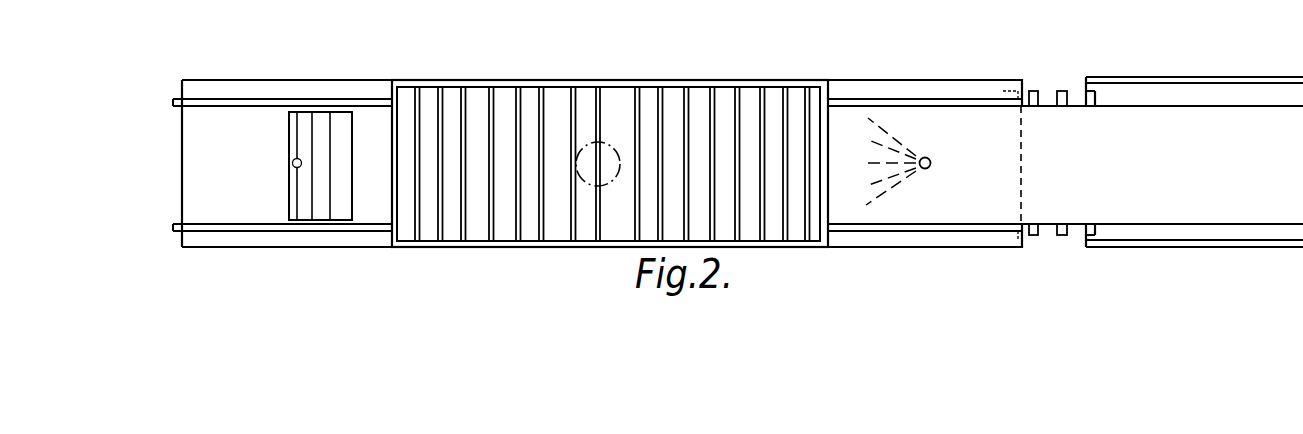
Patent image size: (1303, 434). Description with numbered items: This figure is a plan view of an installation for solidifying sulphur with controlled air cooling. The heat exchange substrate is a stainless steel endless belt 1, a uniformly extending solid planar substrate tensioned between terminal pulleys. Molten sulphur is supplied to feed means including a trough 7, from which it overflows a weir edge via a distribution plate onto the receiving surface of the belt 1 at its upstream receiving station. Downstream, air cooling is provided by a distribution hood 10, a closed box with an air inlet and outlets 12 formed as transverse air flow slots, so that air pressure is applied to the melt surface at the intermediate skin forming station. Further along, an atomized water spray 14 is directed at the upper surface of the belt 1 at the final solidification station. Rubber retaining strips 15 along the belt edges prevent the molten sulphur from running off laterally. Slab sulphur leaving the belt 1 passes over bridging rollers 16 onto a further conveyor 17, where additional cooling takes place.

The endless belt 1 is at (196, 154).
The trough 7 is at (303, 118).
The distribution hood 10 is at (530, 87).
The outlets 12 is at (467, 117).
The atomized water spray 14 is at (931, 165).
The rubber retaining strips 15 is at (174, 101).
The bridging rollers 16 is at (1047, 97).
The further conveyor 17 is at (1155, 97).